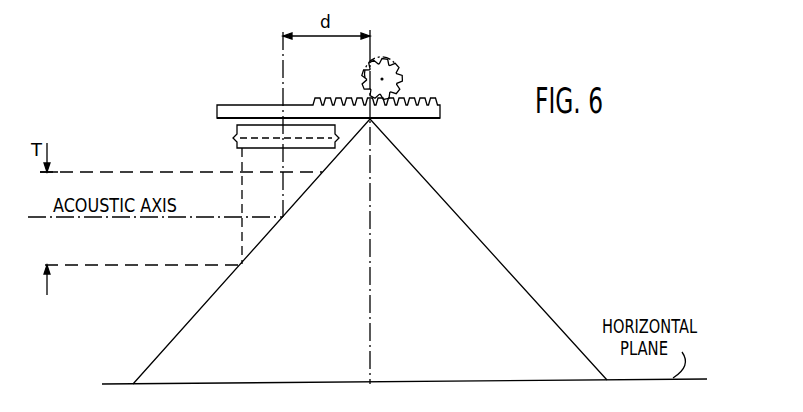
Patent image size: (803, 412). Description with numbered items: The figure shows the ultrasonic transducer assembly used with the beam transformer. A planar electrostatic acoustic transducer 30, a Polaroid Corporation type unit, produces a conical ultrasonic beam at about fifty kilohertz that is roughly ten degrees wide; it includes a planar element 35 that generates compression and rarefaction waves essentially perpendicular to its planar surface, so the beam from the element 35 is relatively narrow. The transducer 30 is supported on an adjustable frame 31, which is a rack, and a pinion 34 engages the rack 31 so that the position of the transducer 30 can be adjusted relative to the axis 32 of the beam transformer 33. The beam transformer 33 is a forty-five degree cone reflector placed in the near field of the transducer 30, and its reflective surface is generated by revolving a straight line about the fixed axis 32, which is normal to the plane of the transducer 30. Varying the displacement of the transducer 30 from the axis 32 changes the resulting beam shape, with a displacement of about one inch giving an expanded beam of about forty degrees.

The planar electrostatic acoustic transducer 30 is at (236, 130).
The adjustable frame 31 is at (430, 113).
The axis 32 is at (370, 43).
The beam transformer 33 is at (306, 190).
The pinion 34 is at (391, 73).
The planar element 35 is at (253, 150).